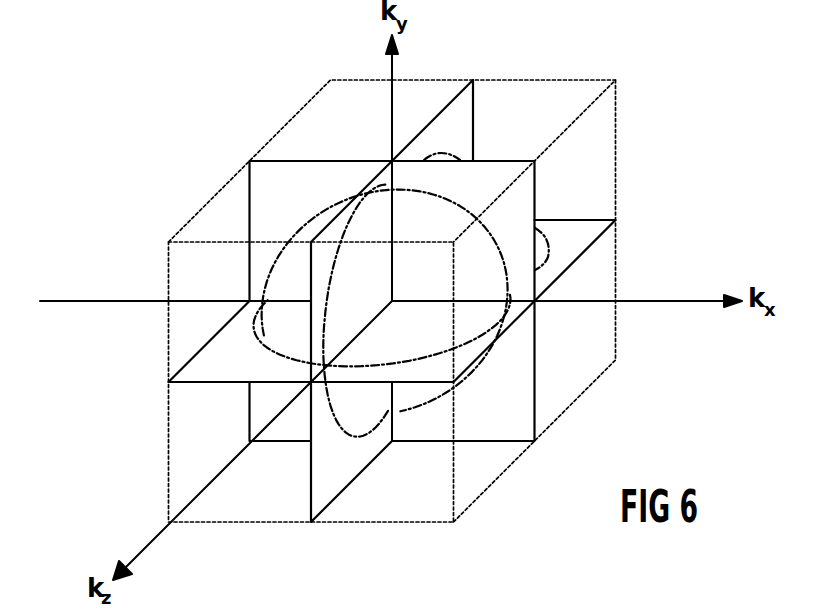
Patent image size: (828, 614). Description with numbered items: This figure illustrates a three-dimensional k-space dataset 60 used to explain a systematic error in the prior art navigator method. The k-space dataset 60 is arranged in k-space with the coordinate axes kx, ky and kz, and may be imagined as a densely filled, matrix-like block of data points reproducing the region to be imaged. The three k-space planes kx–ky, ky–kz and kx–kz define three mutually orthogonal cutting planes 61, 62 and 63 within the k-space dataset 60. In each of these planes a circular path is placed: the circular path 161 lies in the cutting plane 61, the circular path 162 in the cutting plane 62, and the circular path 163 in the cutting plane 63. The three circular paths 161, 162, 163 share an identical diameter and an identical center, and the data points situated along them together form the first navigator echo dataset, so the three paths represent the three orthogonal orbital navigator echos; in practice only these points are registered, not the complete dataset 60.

The three-dimensional k-space dataset 60 is at (490, 486).
The cutting plane 61 is at (535, 360).
The cutting plane 62 is at (311, 488).
The cutting plane 63 is at (197, 350).
The circular path 161 is at (480, 365).
The circular path 162 is at (351, 430).
The circular path 163 is at (272, 348).